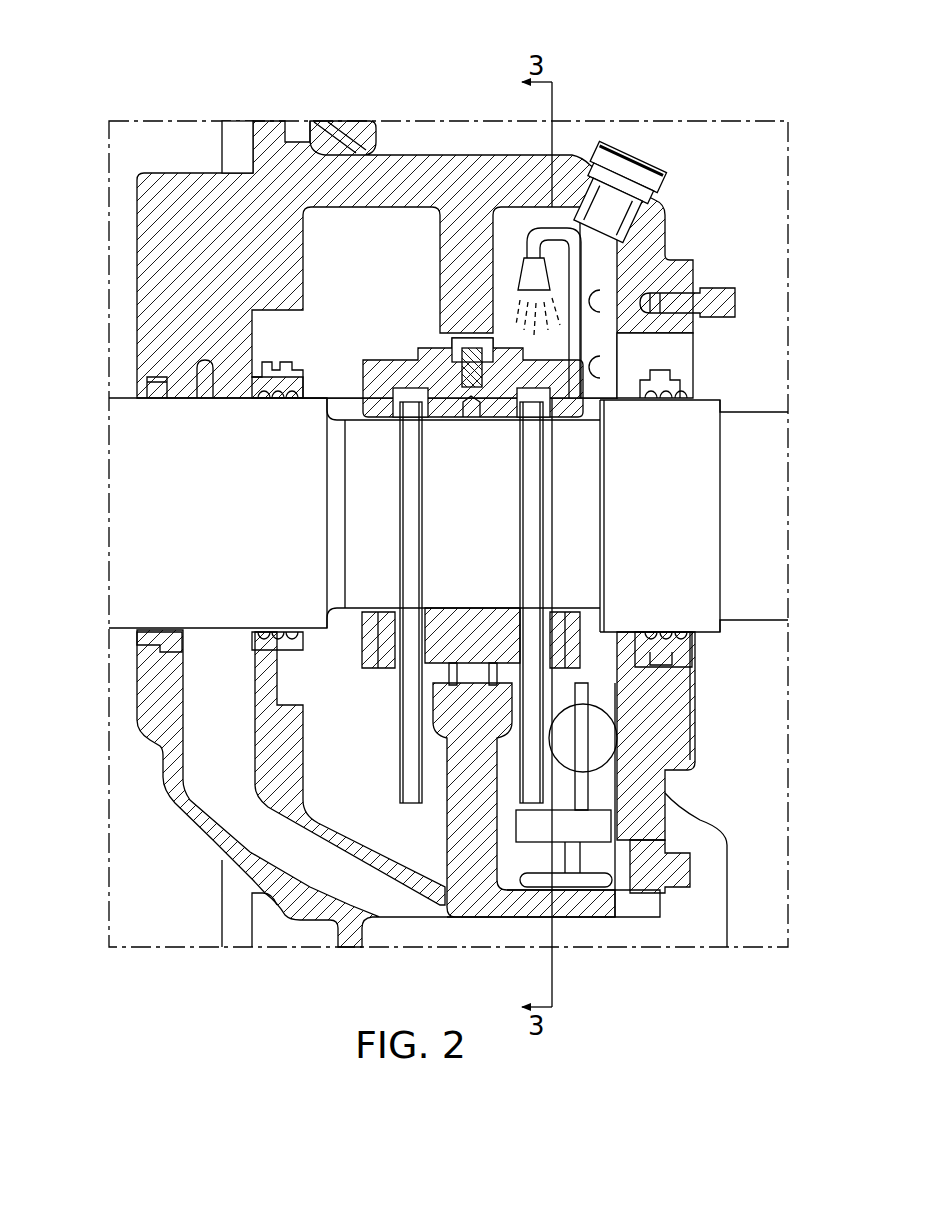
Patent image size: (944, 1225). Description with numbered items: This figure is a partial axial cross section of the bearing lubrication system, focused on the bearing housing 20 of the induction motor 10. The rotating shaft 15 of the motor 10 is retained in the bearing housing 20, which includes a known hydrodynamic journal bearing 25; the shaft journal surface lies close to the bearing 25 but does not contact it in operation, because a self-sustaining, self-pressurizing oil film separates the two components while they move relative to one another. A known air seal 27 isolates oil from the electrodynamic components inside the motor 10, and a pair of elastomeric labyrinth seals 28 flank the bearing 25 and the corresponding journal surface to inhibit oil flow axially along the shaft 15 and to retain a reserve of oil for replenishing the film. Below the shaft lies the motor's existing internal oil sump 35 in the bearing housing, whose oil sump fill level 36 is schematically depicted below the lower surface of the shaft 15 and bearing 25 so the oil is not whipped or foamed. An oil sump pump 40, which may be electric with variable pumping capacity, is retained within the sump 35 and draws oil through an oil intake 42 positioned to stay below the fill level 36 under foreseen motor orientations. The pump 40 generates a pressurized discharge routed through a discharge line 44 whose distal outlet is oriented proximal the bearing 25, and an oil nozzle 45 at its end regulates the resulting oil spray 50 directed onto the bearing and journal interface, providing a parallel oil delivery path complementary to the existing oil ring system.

The induction motor 10 is at (140, 84).
The rotating shaft 15 is at (757, 467).
The bearing housing 20 is at (482, 158).
The hydrodynamic journal bearing 25 is at (350, 652).
The air seal 27 is at (152, 388).
The elastomeric labyrinth seals 28 is at (258, 378).
The internal oil sump 35 is at (367, 798).
The oil sump fill level 36 is at (300, 706).
The oil sump pump 40 is at (597, 830).
The oil intake 42 is at (580, 887).
The discharge line 44 is at (622, 168).
The oil nozzle 45 is at (521, 268).
The oil spray 50 is at (527, 335).